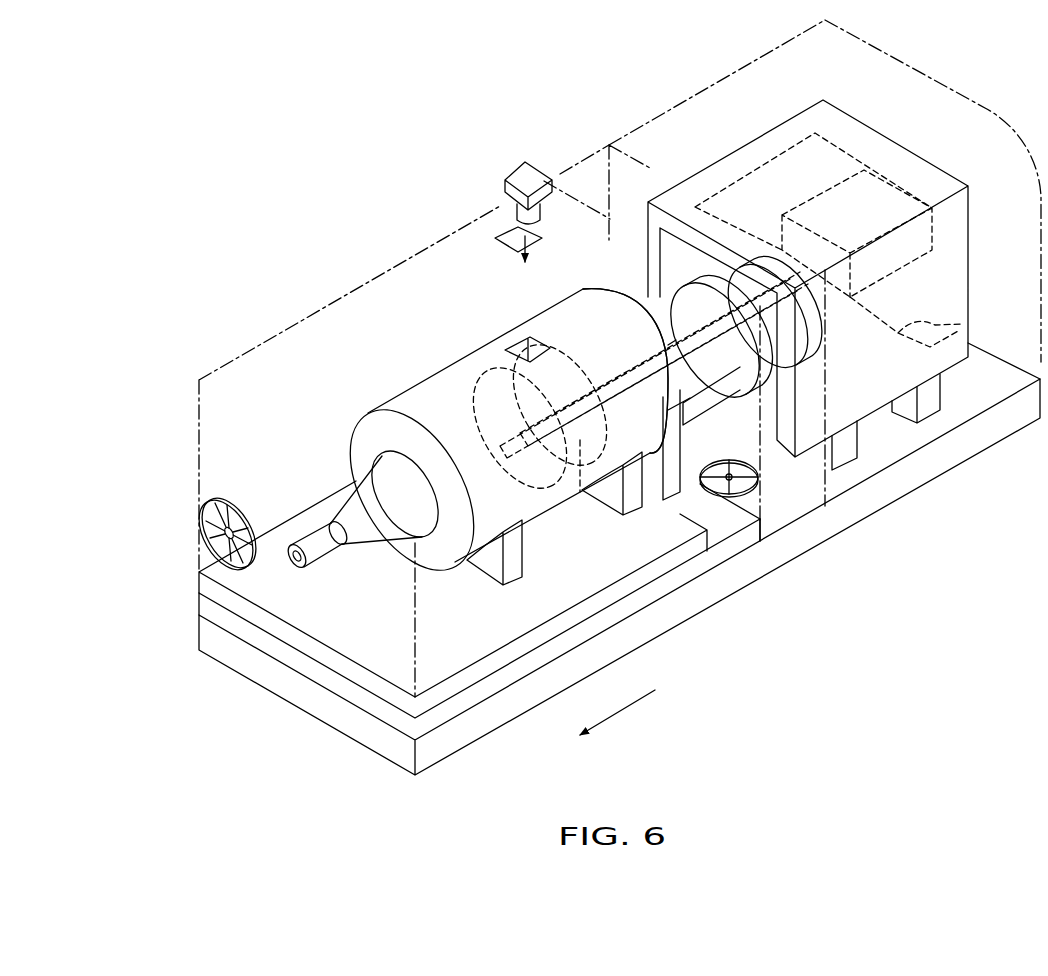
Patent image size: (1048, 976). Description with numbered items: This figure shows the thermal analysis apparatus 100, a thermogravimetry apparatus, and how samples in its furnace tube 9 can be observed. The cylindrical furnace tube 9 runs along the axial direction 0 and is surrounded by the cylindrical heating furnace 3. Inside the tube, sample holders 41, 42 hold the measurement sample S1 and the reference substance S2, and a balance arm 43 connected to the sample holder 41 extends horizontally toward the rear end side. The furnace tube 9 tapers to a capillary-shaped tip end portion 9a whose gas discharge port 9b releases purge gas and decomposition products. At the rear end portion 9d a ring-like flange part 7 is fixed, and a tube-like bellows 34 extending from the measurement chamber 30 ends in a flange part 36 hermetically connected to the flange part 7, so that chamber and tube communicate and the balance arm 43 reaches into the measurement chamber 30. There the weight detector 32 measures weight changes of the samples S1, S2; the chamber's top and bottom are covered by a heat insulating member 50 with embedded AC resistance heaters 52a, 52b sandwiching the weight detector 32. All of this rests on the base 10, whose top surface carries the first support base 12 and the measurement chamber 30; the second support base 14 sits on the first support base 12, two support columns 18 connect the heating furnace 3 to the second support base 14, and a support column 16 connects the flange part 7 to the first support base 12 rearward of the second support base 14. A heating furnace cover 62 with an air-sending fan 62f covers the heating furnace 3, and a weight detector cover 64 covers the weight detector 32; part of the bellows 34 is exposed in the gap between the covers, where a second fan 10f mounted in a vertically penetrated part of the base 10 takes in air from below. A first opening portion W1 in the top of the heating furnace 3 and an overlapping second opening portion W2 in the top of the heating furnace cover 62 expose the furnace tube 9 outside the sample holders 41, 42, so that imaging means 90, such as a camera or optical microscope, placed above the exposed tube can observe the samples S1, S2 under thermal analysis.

The heating furnace 3 is at (386, 405).
The flange part 7 is at (624, 306).
The furnace tube 9 is at (384, 458).
The tip end portion 9a is at (318, 548).
The gas discharge port 9b is at (298, 566).
The rear end portion 9d is at (550, 244).
The base 10 is at (748, 578).
The second fan 10f is at (758, 480).
The first support base 12 is at (460, 702).
The second support base 14 is at (514, 654).
The support column 16 is at (684, 497).
The support columns 18 is at (642, 507).
The measurement chamber 30 is at (800, 440).
The weight detector 32 is at (922, 229).
The bellows 34 is at (708, 380).
The flange part 36 is at (642, 300).
The sample holder 41 is at (472, 416).
The sample holder 42 is at (532, 441).
The balance arm 43 is at (598, 385).
The heat insulating member 50 is at (968, 302).
The AC resistance heater 52a is at (842, 160).
The AC resistance heater 52b is at (965, 326).
The heating furnace cover 62 is at (406, 261).
The fan 62f is at (204, 533).
The weight detector cover 64 is at (740, 70).
The imaging means 90 is at (520, 172).
The thermal analysis apparatus 100 is at (822, 652).
The first opening portion W1 is at (522, 342).
The second opening portion W2 is at (503, 232).
The sample S1 is at (505, 368).
The sample S2 is at (529, 384).
The axial direction 0 is at (617, 721).